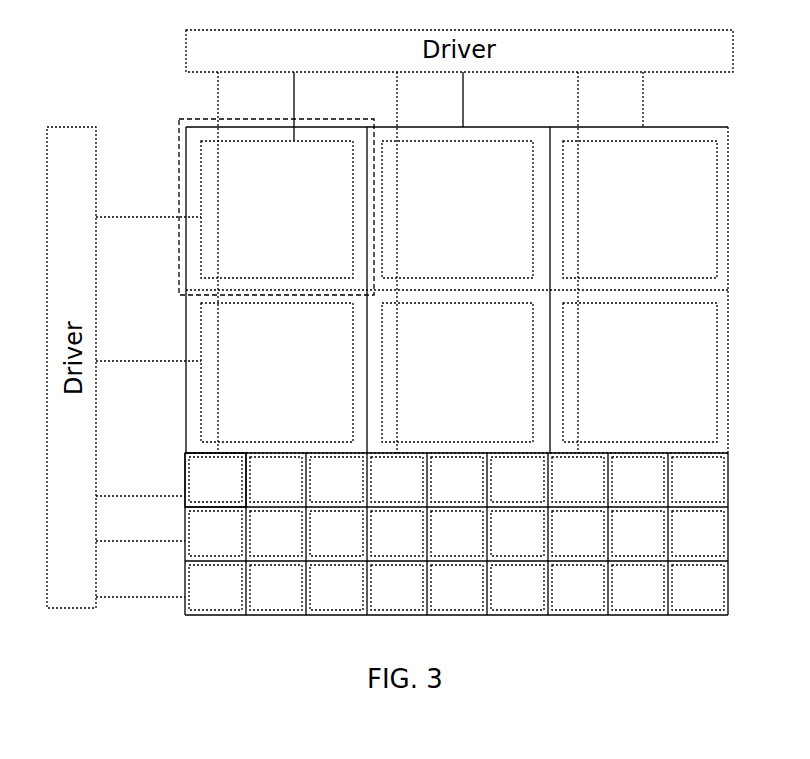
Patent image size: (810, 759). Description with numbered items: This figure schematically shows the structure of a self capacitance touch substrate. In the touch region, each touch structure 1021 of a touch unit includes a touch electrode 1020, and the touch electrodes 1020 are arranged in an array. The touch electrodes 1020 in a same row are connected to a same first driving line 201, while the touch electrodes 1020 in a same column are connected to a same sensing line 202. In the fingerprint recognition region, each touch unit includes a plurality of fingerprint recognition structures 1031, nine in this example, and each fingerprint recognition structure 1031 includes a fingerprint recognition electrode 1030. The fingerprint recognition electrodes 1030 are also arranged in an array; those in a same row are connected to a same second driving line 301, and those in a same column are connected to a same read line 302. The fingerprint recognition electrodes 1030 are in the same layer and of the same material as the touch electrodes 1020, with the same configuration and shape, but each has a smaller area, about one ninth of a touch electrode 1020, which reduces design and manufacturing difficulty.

The touch electrode 1020 is at (300, 140).
The touch structure 1021 is at (270, 108).
The first driving line 201 is at (113, 217).
The sensing line 202 is at (465, 110).
The second driving line 301 is at (113, 498).
The read line 302 is at (578, 110).
The fingerprint recognition electrode 1030 is at (185, 484).
The fingerprint recognition structure 1031 is at (183, 459).